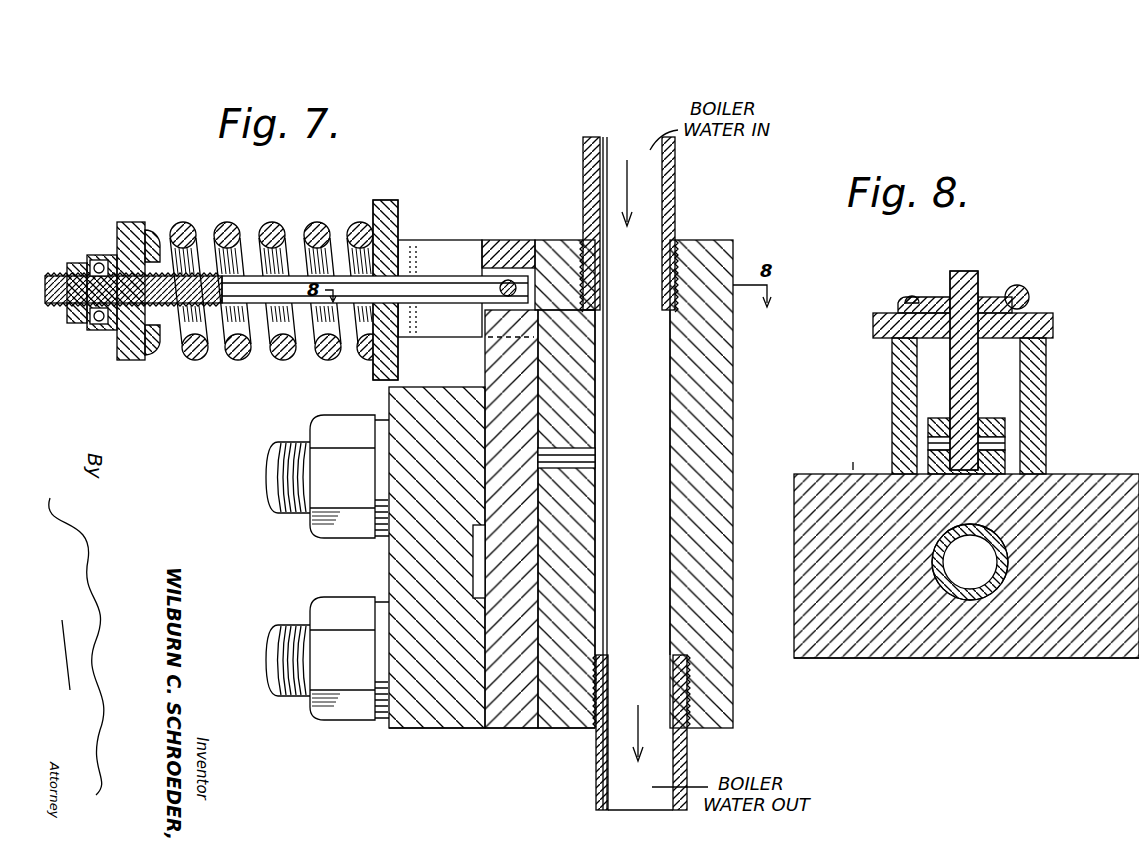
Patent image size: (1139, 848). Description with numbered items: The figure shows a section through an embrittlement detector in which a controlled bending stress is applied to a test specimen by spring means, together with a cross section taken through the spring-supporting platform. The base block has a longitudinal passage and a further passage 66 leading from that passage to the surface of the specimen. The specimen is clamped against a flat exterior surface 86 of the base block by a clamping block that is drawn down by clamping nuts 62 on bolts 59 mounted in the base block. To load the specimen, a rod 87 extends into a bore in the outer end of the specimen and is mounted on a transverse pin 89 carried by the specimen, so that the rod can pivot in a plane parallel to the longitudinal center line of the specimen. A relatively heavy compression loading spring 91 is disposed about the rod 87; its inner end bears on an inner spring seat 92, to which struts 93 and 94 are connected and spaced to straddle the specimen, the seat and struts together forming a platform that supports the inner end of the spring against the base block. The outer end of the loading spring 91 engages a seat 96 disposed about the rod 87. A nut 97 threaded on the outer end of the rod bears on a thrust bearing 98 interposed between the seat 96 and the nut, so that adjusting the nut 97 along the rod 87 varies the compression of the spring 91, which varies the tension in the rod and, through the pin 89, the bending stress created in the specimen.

In FIG. 7, the bolts 59 is at (268, 485).
In FIG. 7, the clamping nuts 62 is at (337, 553).
In FIG. 7, the seat block 66 is at (508, 240).
In FIG. 7, the flat exterior surface 86 is at (558, 726).
In FIG. 8, the flat exterior surface 86 is at (1060, 474).
In FIG. 7, the rod 87 is at (420, 276).
In FIG. 8, the rod 87 is at (975, 284).
In FIG. 7, the transverse pin 89 is at (516, 281).
In FIG. 8, the transverse pin 89 is at (930, 448).
In FIG. 7, the compression loading spring 91 is at (246, 224).
In FIG. 8, the compression loading spring 91 is at (1030, 293).
In FIG. 7, the inner spring seat 92 is at (393, 204).
In FIG. 8, the inner spring seat 92 is at (1053, 325).
In FIG. 8, the strut 93 is at (1035, 398).
In FIG. 7, the strut 94 is at (462, 246).
In FIG. 8, the strut 94 is at (900, 410).
In FIG. 7, the seat 96 is at (128, 355).
In FIG. 7, the nut 97 is at (70, 323).
In FIG. 7, the thrust bearing 98 is at (103, 330).